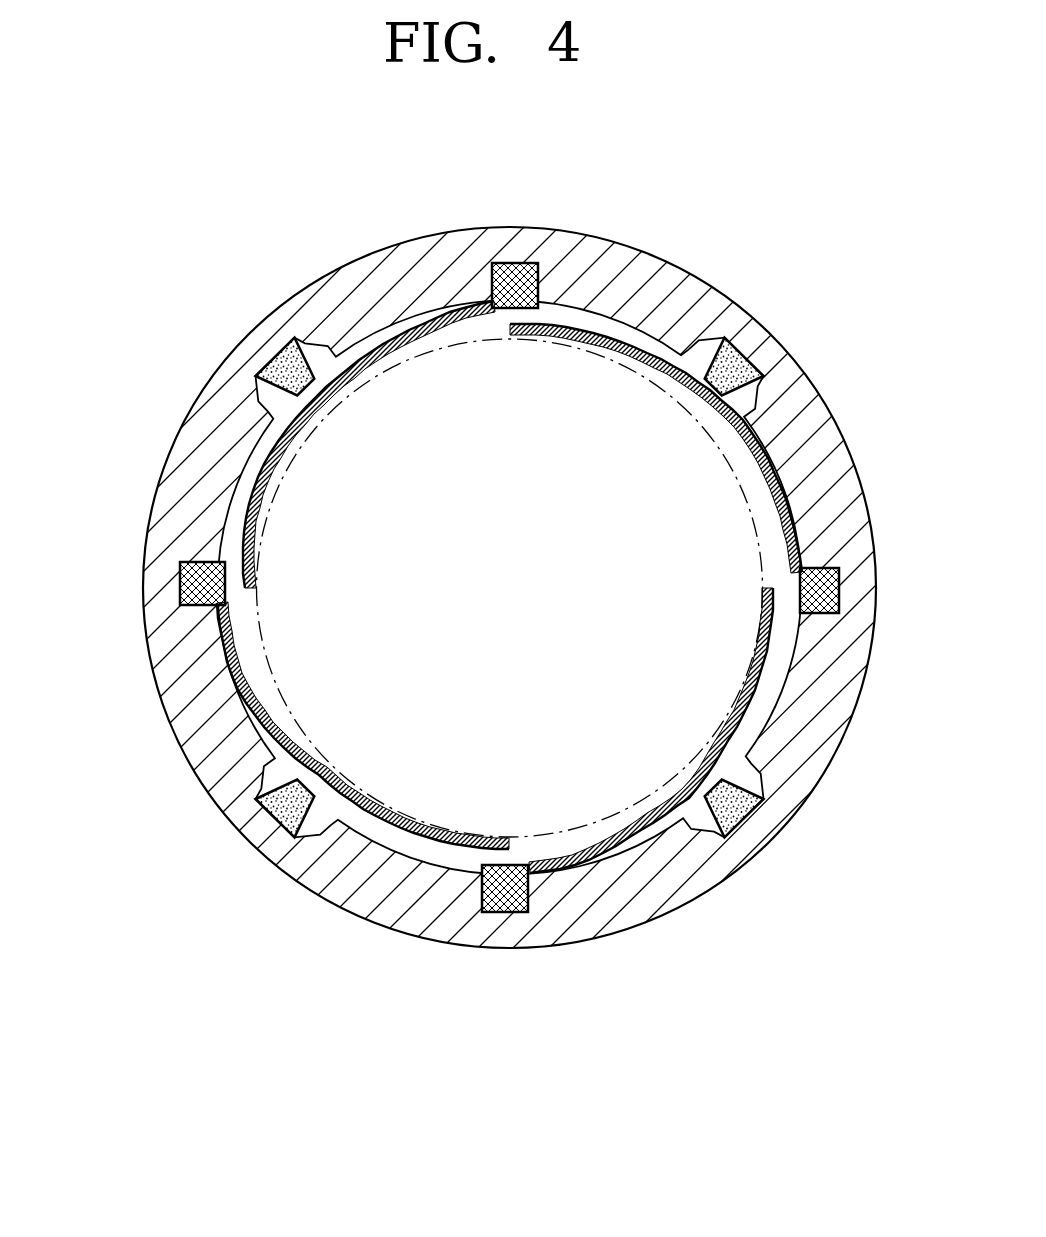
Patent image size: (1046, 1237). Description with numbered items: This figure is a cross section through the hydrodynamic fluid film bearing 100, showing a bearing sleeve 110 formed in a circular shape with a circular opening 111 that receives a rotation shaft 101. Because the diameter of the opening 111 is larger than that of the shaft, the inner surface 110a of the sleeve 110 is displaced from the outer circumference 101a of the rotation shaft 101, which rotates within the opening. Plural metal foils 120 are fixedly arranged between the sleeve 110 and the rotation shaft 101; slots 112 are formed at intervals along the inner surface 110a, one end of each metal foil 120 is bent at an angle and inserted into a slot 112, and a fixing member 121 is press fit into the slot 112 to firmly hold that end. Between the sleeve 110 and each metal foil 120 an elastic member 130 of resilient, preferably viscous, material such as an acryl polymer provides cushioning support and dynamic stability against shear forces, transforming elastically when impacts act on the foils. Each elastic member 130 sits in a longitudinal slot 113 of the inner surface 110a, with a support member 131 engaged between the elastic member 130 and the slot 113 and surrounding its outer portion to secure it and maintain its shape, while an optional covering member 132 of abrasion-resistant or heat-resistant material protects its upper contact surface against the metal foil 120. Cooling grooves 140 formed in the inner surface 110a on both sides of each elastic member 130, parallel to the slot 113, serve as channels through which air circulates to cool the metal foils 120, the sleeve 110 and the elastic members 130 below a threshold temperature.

The hydrodynamic fluid film bearing 100 is at (182, 268).
The rotation shaft 101 is at (410, 437).
The outer circumference of the rotation shaft 101a is at (450, 344).
The bearing sleeve 110 is at (554, 587).
The inner surface of the sleeve 110a is at (765, 705).
The circular opening 111 is at (547, 866).
The slot 112 is at (494, 930).
The slot 113 is at (253, 814).
The metal foil 120 is at (247, 686).
The fixing member 121 is at (510, 915).
The elastic member 130 is at (283, 833).
The support member 131 is at (297, 840).
The covering member 132 is at (720, 824).
The cooling groove 140 is at (327, 806).